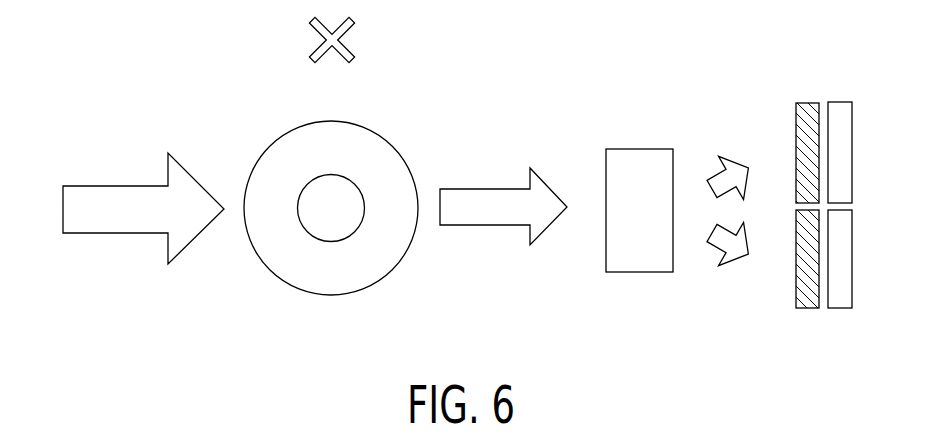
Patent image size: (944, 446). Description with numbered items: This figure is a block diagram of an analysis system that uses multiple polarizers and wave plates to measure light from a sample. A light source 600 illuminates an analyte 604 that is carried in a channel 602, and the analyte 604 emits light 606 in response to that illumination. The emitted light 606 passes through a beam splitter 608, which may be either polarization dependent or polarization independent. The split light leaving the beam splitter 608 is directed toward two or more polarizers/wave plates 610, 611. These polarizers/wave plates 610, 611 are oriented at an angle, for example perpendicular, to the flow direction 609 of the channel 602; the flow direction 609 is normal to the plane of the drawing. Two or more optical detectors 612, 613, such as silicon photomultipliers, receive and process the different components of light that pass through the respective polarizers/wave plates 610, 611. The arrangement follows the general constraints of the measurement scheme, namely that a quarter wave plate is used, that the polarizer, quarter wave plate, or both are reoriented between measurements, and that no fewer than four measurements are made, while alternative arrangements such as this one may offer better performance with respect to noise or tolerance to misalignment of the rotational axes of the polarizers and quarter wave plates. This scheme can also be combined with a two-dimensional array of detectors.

The light source 600 is at (108, 185).
The channel 602 is at (278, 138).
The analyte 604 is at (330, 175).
The emitted light 606 is at (483, 188).
The beam splitter 608 is at (640, 149).
The flow direction 609 is at (350, 33).
The polarizer/wave plate 610 is at (802, 102).
The polarizer/wave plate 611 is at (802, 308).
The optical detector 612 is at (843, 102).
The optical detector 613 is at (843, 308).